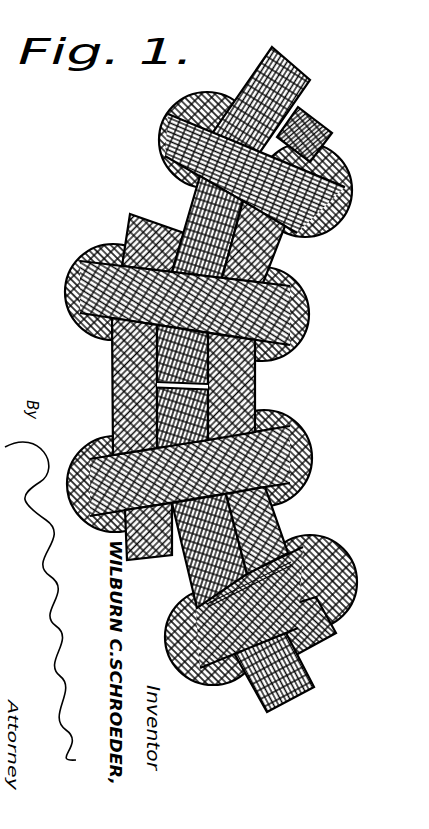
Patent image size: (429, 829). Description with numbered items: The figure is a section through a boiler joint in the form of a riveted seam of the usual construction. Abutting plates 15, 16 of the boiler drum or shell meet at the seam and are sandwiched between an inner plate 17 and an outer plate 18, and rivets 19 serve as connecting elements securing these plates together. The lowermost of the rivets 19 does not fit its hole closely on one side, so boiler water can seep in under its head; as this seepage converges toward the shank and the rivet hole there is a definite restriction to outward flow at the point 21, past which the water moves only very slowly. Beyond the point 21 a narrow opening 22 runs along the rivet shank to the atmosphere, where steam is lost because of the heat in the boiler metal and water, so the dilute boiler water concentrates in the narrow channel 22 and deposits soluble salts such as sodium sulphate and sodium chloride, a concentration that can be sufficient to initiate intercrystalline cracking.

The abutting plate 15 is at (287, 73).
The abutting plate 16 is at (292, 688).
The inner plate 17 is at (265, 248).
The outer plate 18 is at (122, 378).
The rivet 19 is at (172, 152).
The point of restriction 21 is at (297, 563).
The narrow opening 22 is at (222, 604).